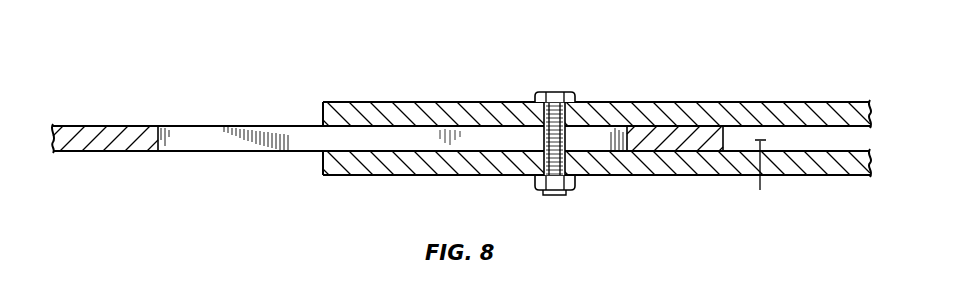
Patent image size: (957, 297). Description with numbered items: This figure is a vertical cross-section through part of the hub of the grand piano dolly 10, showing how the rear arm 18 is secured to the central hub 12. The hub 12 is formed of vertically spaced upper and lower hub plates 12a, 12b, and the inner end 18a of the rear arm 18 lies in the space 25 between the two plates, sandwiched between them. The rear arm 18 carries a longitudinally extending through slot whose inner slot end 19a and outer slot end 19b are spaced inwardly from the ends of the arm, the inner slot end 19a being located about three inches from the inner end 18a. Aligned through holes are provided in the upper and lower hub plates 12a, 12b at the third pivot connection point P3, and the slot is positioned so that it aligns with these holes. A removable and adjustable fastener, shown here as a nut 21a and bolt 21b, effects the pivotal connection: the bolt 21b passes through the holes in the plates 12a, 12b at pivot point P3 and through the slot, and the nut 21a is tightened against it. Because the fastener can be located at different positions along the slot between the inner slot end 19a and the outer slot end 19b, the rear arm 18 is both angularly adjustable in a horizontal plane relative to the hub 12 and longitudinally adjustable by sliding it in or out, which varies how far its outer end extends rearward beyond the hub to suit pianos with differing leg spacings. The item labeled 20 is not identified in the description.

The grand piano dolly 10 is at (288, 124).
The central hub 12 is at (597, 137).
The upper hub plate 12a is at (823, 102).
The lower hub plate 12b is at (816, 176).
The rear arm 18 is at (106, 158).
The inner end of rear arm 18a is at (724, 138).
The inner slot end 19a is at (626, 140).
The outer slot end 19b is at (163, 141).
The bolt 20 is at (571, 90).
The nut 21a is at (573, 184).
The bolt 21b is at (537, 100).
The space between hub plates 25 is at (755, 181).
The third pivot connection point P3 is at (556, 74).